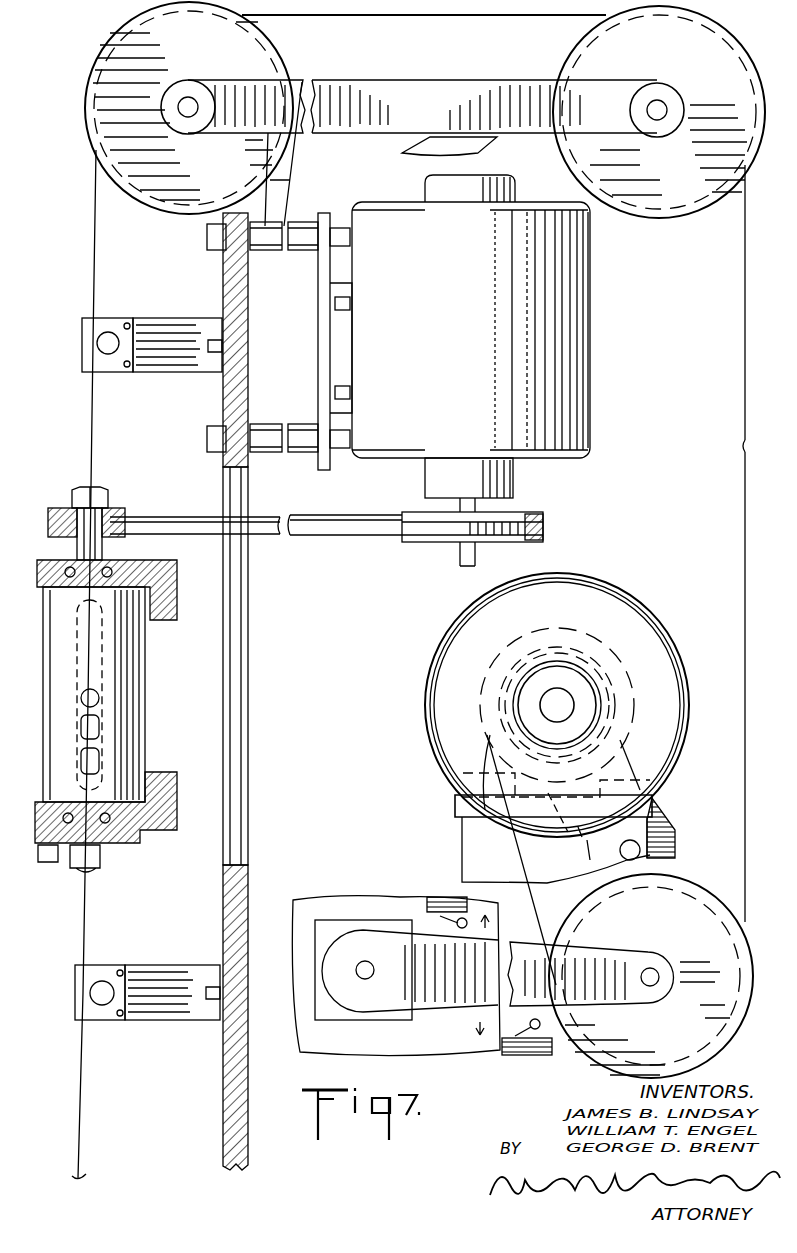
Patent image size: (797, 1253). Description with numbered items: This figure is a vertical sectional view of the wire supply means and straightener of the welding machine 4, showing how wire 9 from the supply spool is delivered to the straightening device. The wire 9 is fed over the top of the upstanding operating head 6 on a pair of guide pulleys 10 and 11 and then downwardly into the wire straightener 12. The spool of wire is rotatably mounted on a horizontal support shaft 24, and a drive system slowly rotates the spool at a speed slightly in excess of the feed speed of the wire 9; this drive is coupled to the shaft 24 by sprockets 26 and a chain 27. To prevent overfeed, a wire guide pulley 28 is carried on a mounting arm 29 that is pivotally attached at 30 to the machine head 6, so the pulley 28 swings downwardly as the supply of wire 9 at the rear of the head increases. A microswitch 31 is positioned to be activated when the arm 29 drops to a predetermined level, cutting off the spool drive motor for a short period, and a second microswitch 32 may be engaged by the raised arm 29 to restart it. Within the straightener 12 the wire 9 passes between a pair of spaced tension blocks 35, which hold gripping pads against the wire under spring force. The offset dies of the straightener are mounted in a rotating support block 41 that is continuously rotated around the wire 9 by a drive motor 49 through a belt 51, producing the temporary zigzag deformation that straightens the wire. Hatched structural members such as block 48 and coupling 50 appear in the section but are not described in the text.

The welding machine 4 is at (540, 13).
The operating head 6 is at (238, 905).
The wire 9 is at (417, 15).
The guide pulley 10 is at (580, 59).
The guide pulley 11 is at (242, 66).
The wire straightening device 12 is at (168, 716).
The horizontal support shaft 24 is at (568, 706).
The sprockets 26 is at (598, 742).
The chain 27 is at (662, 786).
The wire guide pulley 28 is at (725, 1000).
The mounting arm 29 is at (582, 952).
The pivot 30 is at (363, 962).
The microswitch 31 is at (525, 1056).
The second microswitch 32 is at (448, 897).
The tension blocks 35 is at (112, 370).
The rotating support block 41 is at (130, 676).
The bearing block 48 is at (170, 593).
The drive motor 49 is at (432, 307).
The coupling nut 50 is at (108, 510).
The belt 51 is at (358, 517).